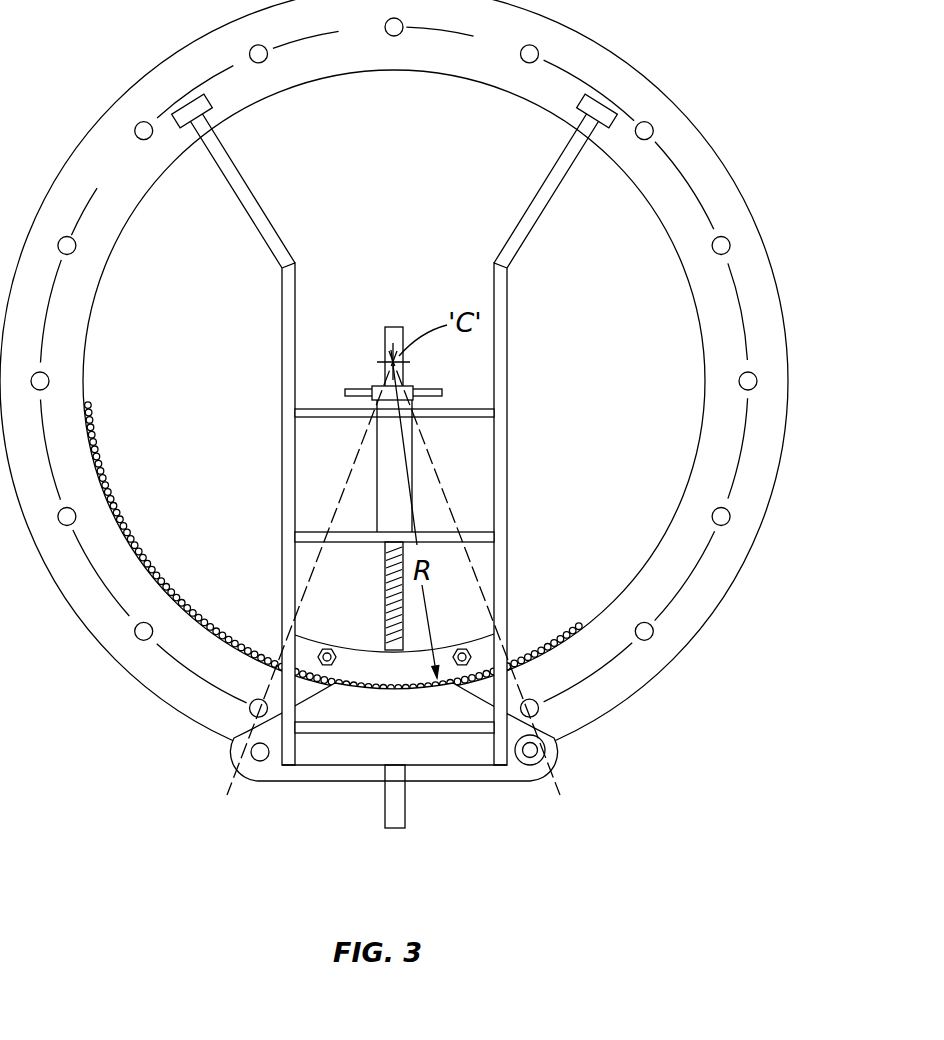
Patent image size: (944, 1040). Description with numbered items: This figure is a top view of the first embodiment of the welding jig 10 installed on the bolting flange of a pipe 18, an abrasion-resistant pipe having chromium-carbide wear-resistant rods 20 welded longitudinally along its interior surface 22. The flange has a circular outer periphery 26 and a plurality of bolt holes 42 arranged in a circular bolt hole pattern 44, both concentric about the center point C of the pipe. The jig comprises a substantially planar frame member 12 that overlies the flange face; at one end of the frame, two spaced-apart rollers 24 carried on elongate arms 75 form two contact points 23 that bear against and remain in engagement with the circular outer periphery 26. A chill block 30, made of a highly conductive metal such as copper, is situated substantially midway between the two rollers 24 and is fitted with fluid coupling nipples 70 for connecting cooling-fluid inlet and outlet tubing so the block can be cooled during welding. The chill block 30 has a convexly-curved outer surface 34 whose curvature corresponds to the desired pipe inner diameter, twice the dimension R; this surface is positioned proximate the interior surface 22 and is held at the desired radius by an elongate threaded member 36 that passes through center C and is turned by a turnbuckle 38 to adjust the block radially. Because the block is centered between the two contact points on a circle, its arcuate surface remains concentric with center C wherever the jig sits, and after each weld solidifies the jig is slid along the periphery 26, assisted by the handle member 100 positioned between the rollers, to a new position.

The welding jig 10 is at (270, 402).
The frame member 12 is at (540, 778).
The pipe 18 is at (418, 387).
The wear-resistant rods 20 is at (120, 520).
The interior surface 22 is at (418, 73).
The contact points 23 is at (556, 740).
The rollers 24 is at (186, 106).
The circular outer periphery 26 is at (782, 465).
The chill block 30 is at (372, 660).
The convexly-curved outer surface 34 is at (234, 744).
The elongate threaded member 36 is at (393, 326).
The turnbuckle 38 is at (410, 388).
The bolt holes 42 is at (652, 640).
The circular bolt hole pattern 44 is at (689, 183).
The fluid coupling nipples 70 is at (326, 648).
The elongate arms 75 is at (240, 200).
The handle member 100 is at (395, 829).